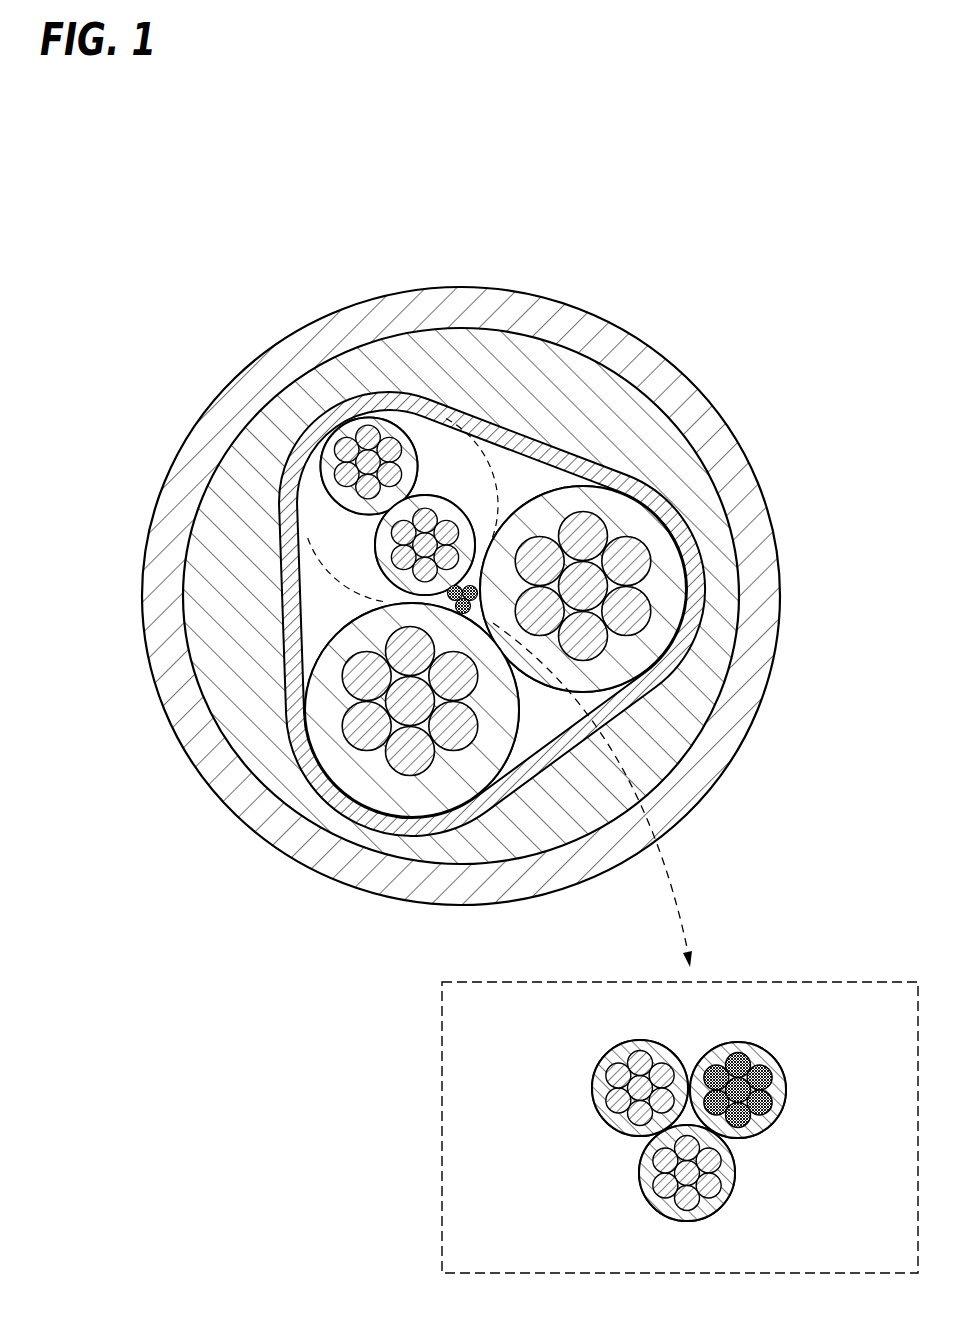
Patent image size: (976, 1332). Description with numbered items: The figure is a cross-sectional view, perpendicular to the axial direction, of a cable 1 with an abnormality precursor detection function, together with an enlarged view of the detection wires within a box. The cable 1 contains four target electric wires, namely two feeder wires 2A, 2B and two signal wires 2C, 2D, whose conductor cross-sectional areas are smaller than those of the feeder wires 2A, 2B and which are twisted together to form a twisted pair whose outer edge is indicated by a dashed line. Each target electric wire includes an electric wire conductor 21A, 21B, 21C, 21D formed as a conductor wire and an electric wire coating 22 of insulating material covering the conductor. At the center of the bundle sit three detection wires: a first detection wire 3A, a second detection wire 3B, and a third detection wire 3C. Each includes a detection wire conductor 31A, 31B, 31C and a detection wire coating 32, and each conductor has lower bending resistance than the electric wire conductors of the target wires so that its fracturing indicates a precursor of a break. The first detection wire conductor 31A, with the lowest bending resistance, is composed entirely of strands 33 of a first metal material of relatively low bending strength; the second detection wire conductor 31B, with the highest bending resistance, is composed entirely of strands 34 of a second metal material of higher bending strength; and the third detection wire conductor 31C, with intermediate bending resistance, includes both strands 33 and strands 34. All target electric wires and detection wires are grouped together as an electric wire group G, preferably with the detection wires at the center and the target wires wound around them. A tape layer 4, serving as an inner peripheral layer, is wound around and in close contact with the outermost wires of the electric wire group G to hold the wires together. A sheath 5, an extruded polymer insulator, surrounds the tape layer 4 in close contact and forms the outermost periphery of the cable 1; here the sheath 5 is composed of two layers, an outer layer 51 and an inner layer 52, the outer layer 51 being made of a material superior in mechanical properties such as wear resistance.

The cable with an abnormality precursor detection function 1 is at (789, 238).
The feeder wire 2A is at (133, 932).
The feeder wire 2B is at (869, 518).
The signal wire 2C is at (597, 243).
The signal wire 2D is at (347, 214).
The electric wire conductor 21A is at (362, 744).
The electric wire conductor 21B is at (632, 553).
The electric wire conductor 21C is at (452, 531).
The electric wire conductor 21D is at (368, 426).
The electric wire coating 22 is at (333, 445).
The first detection wire 3A is at (476, 588).
The second detection wire 3B is at (848, 1027).
The third detection wire 3C is at (587, 1250).
The first detection wire conductor 31A is at (613, 1063).
The second detection wire conductor 31B is at (770, 1058).
The third detection wire conductor 31C is at (656, 1187).
The detection wire coating 32 is at (597, 1083).
The strand 33 is at (657, 1160).
The strand 34 is at (720, 1184).
The tape layer 4 is at (390, 810).
The sheath 5 is at (848, 758).
The outer layer 51 is at (703, 770).
The inner layer 52 is at (662, 697).
The electric wire group G is at (338, 600).